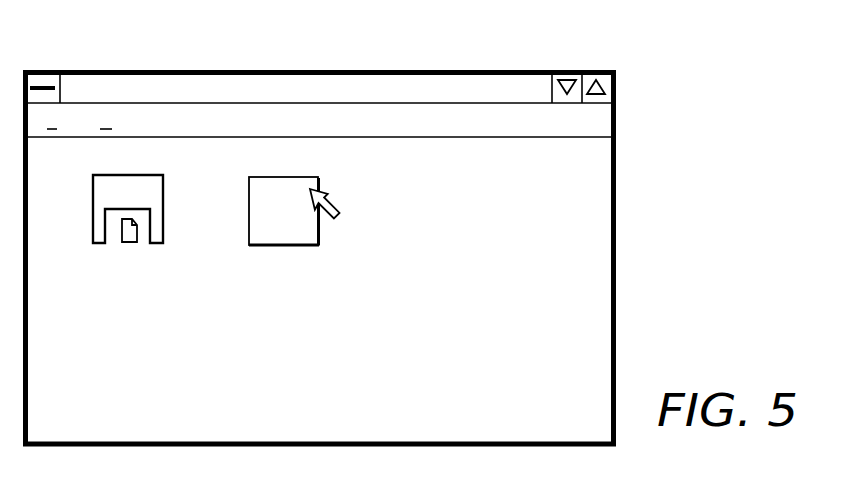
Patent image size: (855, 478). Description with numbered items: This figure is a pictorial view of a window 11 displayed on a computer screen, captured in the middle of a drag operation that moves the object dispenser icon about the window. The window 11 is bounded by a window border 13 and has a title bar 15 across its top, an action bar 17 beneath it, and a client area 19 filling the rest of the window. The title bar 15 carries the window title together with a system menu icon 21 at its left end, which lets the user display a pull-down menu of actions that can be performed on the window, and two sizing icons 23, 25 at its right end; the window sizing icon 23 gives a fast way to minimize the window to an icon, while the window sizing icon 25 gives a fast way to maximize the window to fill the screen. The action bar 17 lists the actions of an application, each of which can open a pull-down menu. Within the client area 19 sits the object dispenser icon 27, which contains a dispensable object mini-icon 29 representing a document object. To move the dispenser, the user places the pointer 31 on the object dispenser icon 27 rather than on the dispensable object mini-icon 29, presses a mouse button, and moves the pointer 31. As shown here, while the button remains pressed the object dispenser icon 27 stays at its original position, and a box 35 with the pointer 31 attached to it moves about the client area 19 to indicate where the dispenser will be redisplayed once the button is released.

The window 11 is at (643, 146).
The window border 13 is at (617, 251).
The title bar 15 is at (502, 71).
The action bar 17 is at (497, 138).
The client area 19 is at (514, 422).
The system menu icon 21 is at (38, 70).
The window sizing icon 23 is at (562, 71).
The window sizing icon 25 is at (600, 71).
The object dispenser icon 27 is at (164, 197).
The dispensable object mini-icon 29 is at (118, 223).
The pointer 31 is at (331, 202).
The box 35 is at (248, 228).